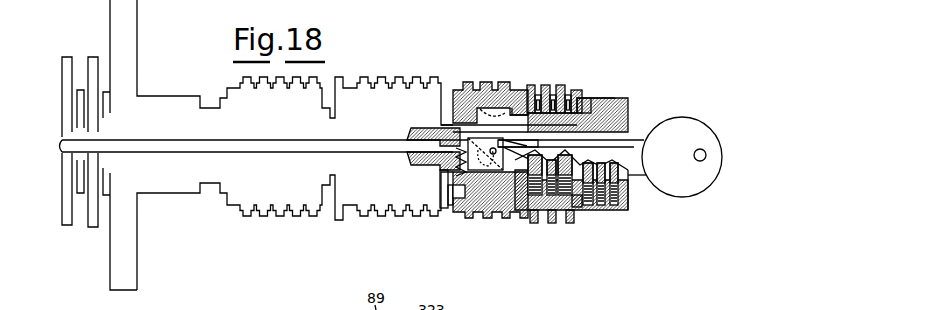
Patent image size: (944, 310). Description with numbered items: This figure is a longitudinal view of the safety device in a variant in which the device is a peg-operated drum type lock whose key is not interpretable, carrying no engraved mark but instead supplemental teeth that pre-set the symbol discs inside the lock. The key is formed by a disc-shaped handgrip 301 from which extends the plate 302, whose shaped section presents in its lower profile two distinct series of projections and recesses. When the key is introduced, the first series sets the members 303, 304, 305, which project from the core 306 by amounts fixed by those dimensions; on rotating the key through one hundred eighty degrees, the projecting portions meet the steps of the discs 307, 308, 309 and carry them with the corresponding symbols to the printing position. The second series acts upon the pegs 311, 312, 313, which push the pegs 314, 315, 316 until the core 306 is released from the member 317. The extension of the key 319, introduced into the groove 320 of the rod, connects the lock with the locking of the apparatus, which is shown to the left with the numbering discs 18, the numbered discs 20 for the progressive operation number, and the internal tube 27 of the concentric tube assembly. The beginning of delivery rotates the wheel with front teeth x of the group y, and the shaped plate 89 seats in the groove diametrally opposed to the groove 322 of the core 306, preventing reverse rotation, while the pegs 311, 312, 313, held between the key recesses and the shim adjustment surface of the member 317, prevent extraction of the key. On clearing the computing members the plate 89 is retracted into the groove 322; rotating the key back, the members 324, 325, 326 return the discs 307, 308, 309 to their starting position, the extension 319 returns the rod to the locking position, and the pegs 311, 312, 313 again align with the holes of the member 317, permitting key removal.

The numbering discs 18 is at (372, 148).
The internal tube 27 is at (418, 130).
The shaped plate 89 is at (482, 88).
The numbered discs 20 is at (522, 92).
The disc-shaped handgrip 301 is at (687, 120).
The plate 302 is at (622, 98).
The member 303 is at (517, 218).
The member 304 is at (542, 220).
The member 305 is at (547, 222).
The core 306 is at (584, 102).
The disc 307 is at (528, 222).
The disc 308 is at (543, 220).
The disc 309 is at (557, 220).
The peg 311 is at (572, 218).
The peg 312 is at (598, 160).
The peg 313 is at (632, 205).
The peg 314 is at (593, 213).
The peg 315 is at (607, 212).
The peg 316 is at (627, 208).
The member 317 is at (604, 98).
The extension of the key 319 is at (500, 86).
The groove 320 is at (465, 90).
The groove 322 is at (528, 88).
The member 324 is at (538, 88).
The member 325 is at (555, 88).
The member 326 is at (571, 90).
The wheel with front teeth x is at (449, 147).
The group y is at (382, 220).